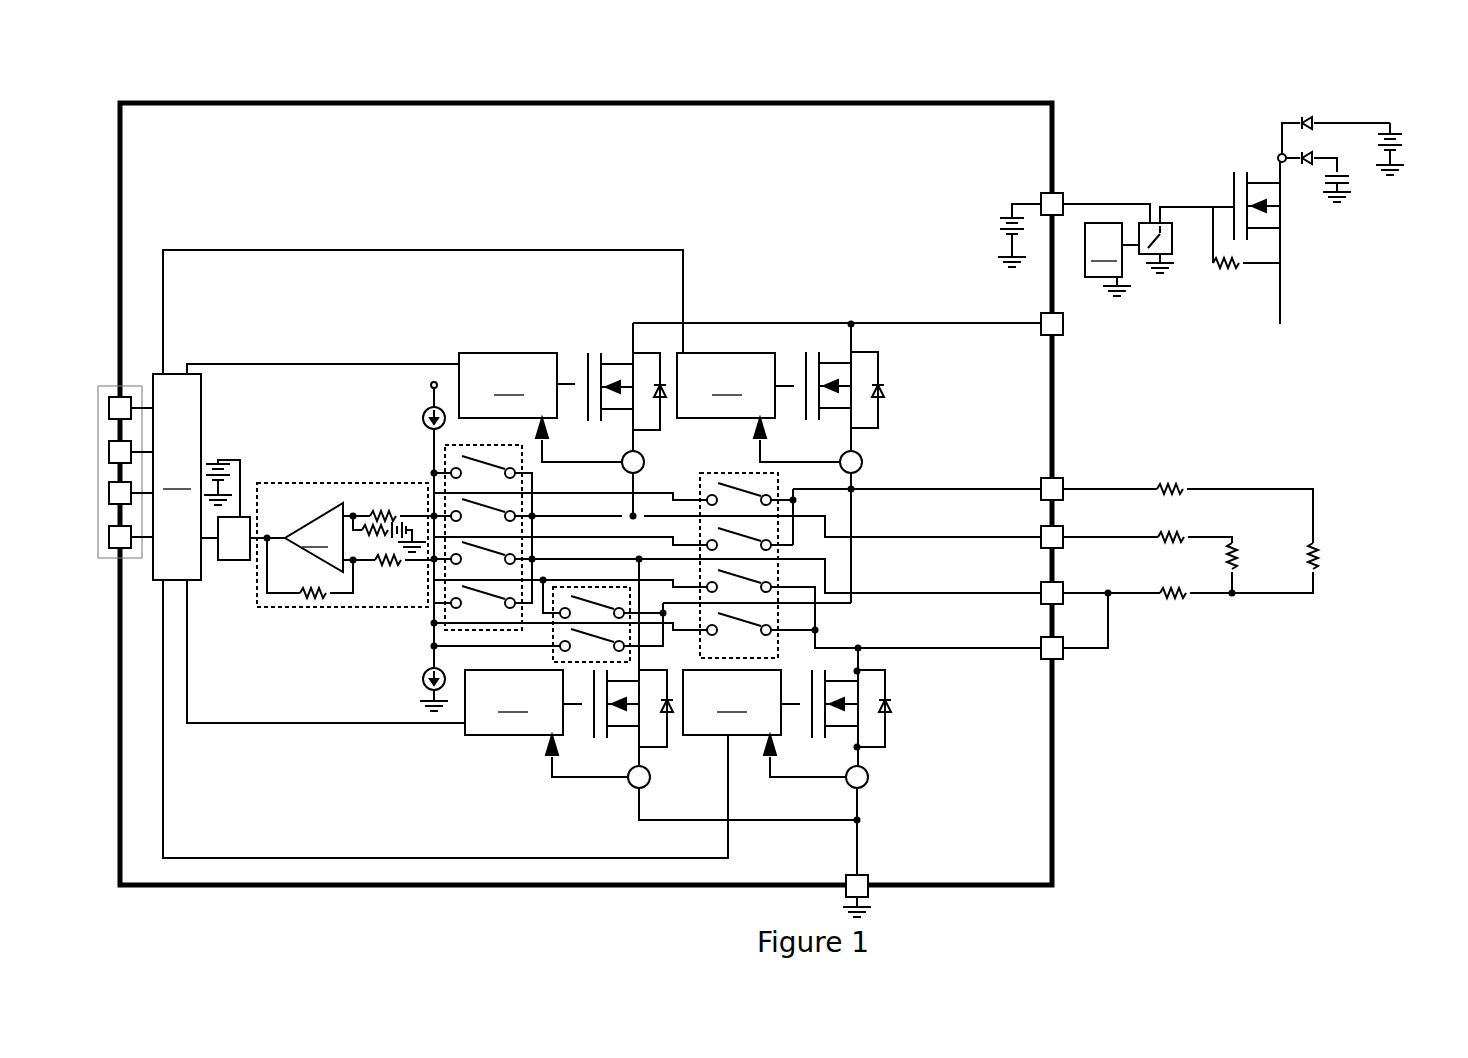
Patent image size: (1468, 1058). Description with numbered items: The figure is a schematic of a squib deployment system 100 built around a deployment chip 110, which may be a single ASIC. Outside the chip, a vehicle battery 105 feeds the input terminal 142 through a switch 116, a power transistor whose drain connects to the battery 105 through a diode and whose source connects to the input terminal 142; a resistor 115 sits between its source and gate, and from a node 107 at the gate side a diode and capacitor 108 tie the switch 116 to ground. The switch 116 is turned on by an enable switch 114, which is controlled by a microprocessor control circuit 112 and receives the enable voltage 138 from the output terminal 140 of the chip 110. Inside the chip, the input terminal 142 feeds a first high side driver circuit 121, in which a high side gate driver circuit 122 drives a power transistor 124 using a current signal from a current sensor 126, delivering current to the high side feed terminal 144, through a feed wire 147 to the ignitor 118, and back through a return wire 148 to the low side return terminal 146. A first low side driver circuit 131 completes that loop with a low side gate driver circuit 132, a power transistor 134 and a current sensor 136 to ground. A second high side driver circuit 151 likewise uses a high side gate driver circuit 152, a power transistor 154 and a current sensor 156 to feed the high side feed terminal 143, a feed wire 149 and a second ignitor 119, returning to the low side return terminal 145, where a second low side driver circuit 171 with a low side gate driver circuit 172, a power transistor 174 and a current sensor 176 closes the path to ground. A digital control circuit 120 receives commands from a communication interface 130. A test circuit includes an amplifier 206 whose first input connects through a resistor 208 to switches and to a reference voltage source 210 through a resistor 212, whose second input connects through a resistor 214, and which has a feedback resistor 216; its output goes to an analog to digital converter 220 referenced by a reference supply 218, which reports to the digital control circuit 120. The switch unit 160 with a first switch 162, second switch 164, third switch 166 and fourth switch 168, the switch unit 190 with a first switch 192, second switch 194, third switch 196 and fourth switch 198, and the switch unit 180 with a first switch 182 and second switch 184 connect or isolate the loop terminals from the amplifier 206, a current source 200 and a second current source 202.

The squib deployment system 100 is at (571, 92).
The vehicle battery 105 is at (1394, 128).
The node 107 is at (1290, 155).
The capacitor 108 is at (1326, 179).
The deployment chip 110 is at (848, 100).
The microprocessor control circuit 112 is at (1108, 259).
The enable switch 114 is at (1152, 222).
The resistor 115 is at (1248, 268).
The switch 116 is at (1238, 168).
The ignitor 118 is at (1320, 548).
The ignitor 119 is at (1238, 534).
The digital control circuit 120 is at (177, 477).
The first high side driver circuit 121 is at (915, 385).
The high side gate driver circuit 122 is at (726, 385).
The power transistor 124 is at (826, 358).
The current sensor 126 is at (863, 462).
The communication interface 130 is at (133, 390).
The first low side driver circuit 131 is at (920, 714).
The low side gate driver circuit 132 is at (732, 702).
The power transistor 134 is at (844, 727).
The current sensor 136 is at (869, 777).
The enable voltage 138 is at (1030, 201).
The output terminal 140 is at (1060, 194).
The input terminal 142 is at (1065, 334).
The high side feed terminal 143 is at (1062, 528).
The high side feed terminal 144 is at (1064, 478).
The low side return terminal 145 is at (1062, 584).
The low side return terminal 146 is at (1062, 638).
The feed wire 147 is at (1160, 482).
The return wire 148 is at (1162, 587).
The feed wire 149 is at (1166, 531).
The second high side driver circuit 151 is at (650, 338).
The high side gate driver circuit 152 is at (508, 385).
The power transistor 154 is at (600, 358).
The current sensor 156 is at (645, 462).
The switch unit 160 is at (739, 554).
The first switch 162 is at (742, 491).
The second switch 164 is at (742, 536).
The third switch 166 is at (742, 578).
The fourth switch 168 is at (742, 621).
The second low side driver circuit 171 is at (648, 730).
The low side gate driver circuit 172 is at (514, 702).
The power transistor 174 is at (624, 728).
The current sensor 176 is at (651, 777).
The switch unit 180 is at (591, 612).
The first switch 182 is at (592, 603).
The second switch 184 is at (592, 646).
The switch unit 190 is at (483, 527).
The first switch 192 is at (483, 475).
The second switch 194 is at (483, 518).
The third switch 196 is at (483, 561).
The fourth switch 198 is at (483, 605).
The current source 200 is at (423, 418).
The second current source 202 is at (423, 679).
The amplifier 206 is at (345, 529).
The resistor 208 is at (396, 520).
The reference voltage source 210 is at (388, 508).
The resistor 212 is at (366, 524).
The resistor 214 is at (390, 562).
The resistor 216 is at (318, 598).
The reference supply 218 is at (228, 460).
The analog to digital converter 220 is at (248, 561).